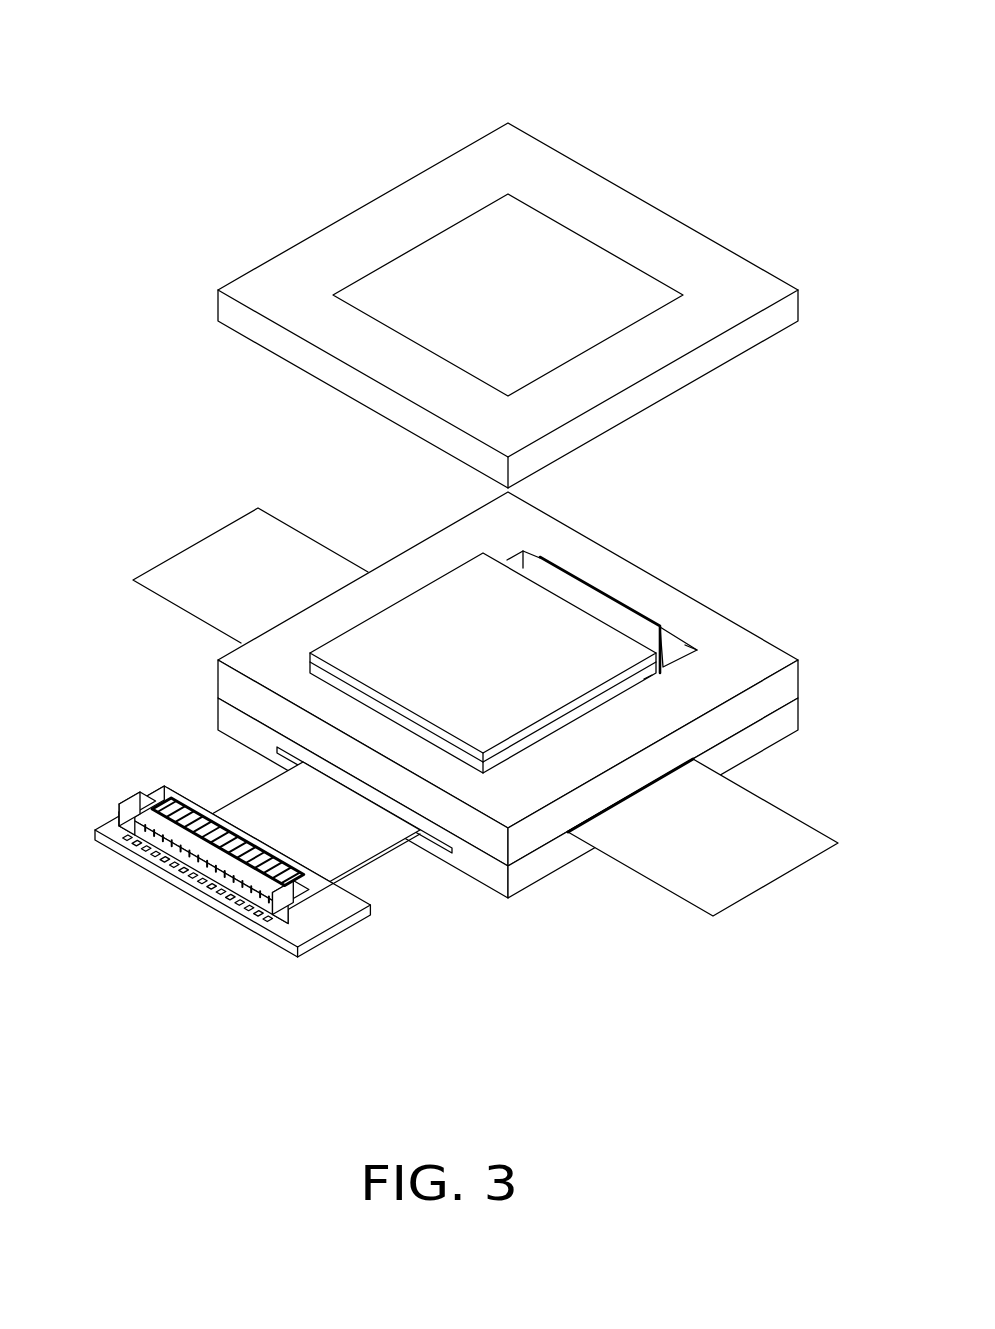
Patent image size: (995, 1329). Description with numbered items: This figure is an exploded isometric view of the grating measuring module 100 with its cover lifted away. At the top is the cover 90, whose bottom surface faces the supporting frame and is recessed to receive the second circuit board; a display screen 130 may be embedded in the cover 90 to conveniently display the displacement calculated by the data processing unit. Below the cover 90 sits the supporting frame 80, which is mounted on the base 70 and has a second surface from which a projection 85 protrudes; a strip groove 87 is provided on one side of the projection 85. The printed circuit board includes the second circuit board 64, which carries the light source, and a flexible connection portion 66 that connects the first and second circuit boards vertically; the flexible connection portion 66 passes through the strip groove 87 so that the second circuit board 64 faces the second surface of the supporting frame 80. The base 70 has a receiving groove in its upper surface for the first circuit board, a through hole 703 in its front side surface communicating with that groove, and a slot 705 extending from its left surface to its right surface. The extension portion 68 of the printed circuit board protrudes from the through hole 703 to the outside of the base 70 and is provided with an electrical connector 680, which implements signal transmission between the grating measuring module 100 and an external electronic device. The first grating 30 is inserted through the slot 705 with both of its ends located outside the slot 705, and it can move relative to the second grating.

The grating measuring module 100 is at (495, 46).
The cover 90 is at (659, 252).
The display screen 130 is at (560, 252).
The supporting frame 80 is at (762, 652).
The base 70 is at (530, 872).
The projection 85 is at (644, 679).
The second circuit board 64 is at (528, 617).
The flexible connection portion 66 is at (622, 618).
The strip groove 87 is at (677, 643).
The first grating 30 is at (748, 808).
The slot 705 is at (600, 818).
The through hole 703 is at (445, 848).
The extension portion 68 is at (273, 798).
The electrical connector 680 is at (142, 805).